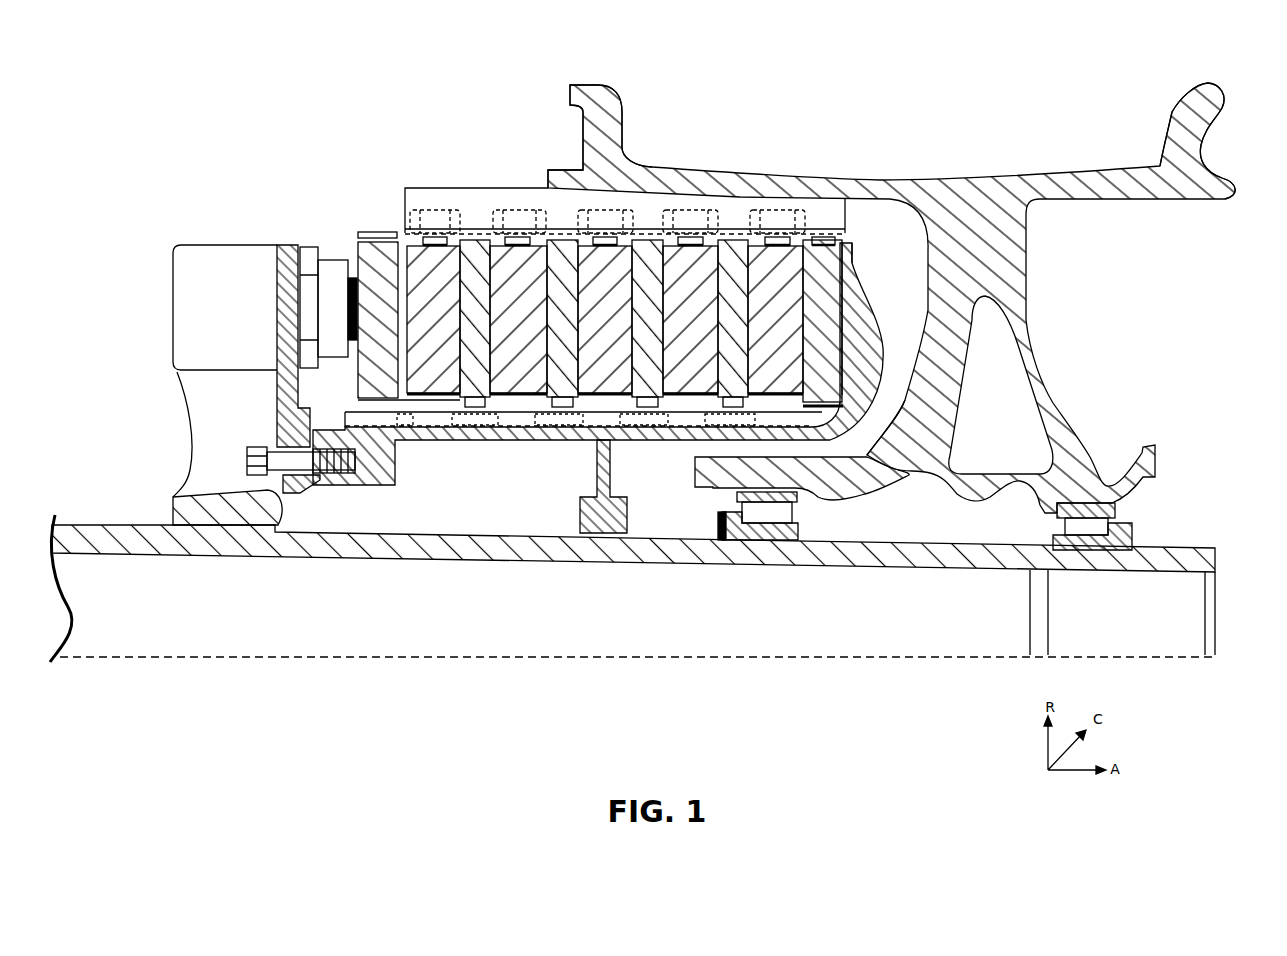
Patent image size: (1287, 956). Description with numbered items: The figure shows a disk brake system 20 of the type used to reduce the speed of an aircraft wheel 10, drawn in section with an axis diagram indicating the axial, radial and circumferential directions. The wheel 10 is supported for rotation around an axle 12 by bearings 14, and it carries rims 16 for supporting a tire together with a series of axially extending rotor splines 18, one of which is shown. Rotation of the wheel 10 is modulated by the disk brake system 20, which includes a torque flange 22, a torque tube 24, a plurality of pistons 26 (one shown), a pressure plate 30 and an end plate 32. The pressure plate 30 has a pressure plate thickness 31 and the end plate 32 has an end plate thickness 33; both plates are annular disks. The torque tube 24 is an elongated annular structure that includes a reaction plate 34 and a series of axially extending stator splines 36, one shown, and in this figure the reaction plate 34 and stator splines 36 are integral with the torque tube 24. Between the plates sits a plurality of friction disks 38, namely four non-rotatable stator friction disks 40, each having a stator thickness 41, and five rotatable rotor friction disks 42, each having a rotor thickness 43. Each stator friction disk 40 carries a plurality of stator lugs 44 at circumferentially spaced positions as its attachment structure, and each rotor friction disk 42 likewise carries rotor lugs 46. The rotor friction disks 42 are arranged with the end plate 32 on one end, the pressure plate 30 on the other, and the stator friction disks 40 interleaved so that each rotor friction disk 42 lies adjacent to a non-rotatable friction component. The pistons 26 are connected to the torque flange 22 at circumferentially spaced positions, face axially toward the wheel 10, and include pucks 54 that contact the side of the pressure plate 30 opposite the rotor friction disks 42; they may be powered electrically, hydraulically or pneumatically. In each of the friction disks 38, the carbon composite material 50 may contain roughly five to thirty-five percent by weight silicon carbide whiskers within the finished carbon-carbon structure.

The wheel 10 is at (1025, 153).
The axle 12 is at (945, 568).
The bearings 14 is at (792, 512).
The rims 16 is at (605, 115).
The rotor splines 18 is at (525, 195).
The disk brake system 20 is at (272, 181).
The torque flange 22 is at (283, 416).
The torque tube 24 is at (500, 435).
The pistons 26 is at (327, 252).
The pressure plate 30 is at (355, 256).
The pressure plate thickness 31 is at (380, 232).
The end plate 32 is at (856, 198).
The end plate thickness 33 is at (877, 450).
The reaction plate 34 is at (866, 313).
The stator splines 36 is at (525, 420).
The friction disks 38 is at (402, 236).
The stator friction disk 40 is at (790, 208).
The stator thickness 41 is at (478, 237).
The rotor friction disk 42 is at (435, 237).
The rotor thickness 43 is at (432, 402).
The stator lugs 44 is at (713, 430).
The rotor lugs 46 is at (685, 207).
The carbon composite material 50 is at (616, 258).
The pucks 54 is at (350, 262).